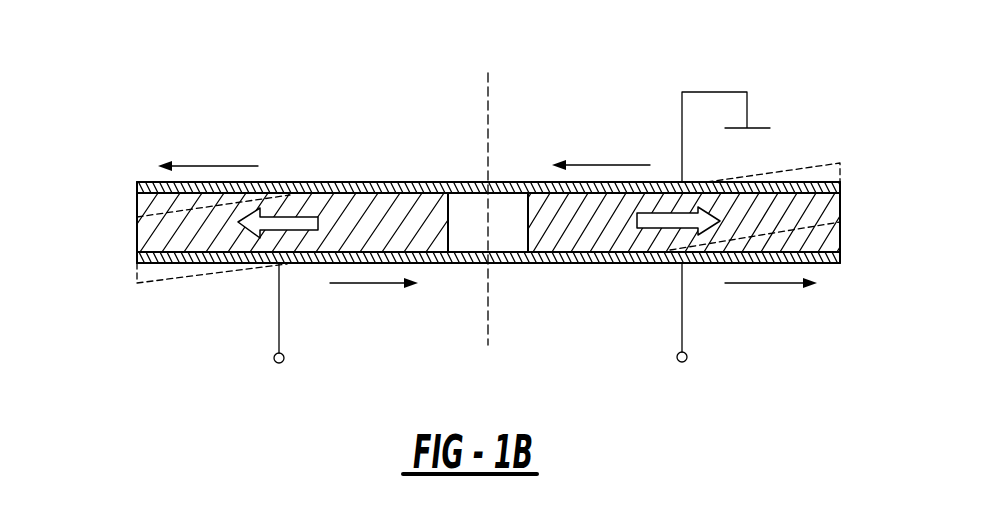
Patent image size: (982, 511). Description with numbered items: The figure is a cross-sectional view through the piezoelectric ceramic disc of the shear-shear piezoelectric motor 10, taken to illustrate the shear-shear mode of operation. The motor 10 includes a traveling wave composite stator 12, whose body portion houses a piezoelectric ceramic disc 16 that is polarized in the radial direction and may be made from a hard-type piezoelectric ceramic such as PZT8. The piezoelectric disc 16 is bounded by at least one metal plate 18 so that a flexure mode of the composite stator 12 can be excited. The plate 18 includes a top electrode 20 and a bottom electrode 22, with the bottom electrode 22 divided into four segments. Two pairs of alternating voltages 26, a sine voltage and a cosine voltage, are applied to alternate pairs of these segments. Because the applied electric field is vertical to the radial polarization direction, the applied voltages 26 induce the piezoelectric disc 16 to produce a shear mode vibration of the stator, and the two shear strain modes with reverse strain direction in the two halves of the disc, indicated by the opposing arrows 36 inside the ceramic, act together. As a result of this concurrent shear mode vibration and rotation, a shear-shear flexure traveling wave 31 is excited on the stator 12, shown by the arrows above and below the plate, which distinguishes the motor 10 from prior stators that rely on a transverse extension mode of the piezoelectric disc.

The shear-shear piezoelectric motor 10 is at (469, 206).
The traveling wave composite stator 12 is at (846, 196).
The piezoelectric ceramic disc 16 is at (408, 182).
The metal plate 18 is at (290, 193).
The top electrode 20 is at (137, 192).
The bottom electrode 22 is at (568, 262).
The alternative voltages 26 is at (260, 360).
The shear-shear flexure traveling wave 31 is at (610, 165).
The strain direction arrows 36 is at (295, 232).